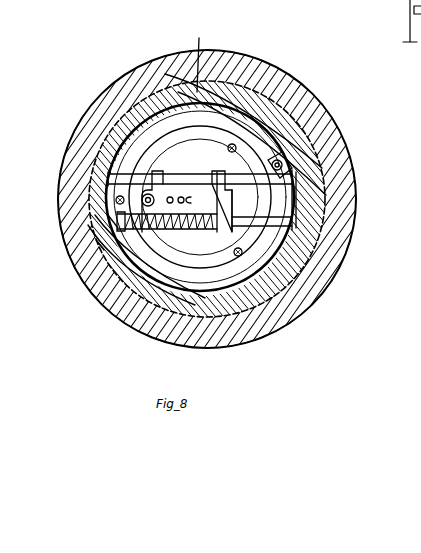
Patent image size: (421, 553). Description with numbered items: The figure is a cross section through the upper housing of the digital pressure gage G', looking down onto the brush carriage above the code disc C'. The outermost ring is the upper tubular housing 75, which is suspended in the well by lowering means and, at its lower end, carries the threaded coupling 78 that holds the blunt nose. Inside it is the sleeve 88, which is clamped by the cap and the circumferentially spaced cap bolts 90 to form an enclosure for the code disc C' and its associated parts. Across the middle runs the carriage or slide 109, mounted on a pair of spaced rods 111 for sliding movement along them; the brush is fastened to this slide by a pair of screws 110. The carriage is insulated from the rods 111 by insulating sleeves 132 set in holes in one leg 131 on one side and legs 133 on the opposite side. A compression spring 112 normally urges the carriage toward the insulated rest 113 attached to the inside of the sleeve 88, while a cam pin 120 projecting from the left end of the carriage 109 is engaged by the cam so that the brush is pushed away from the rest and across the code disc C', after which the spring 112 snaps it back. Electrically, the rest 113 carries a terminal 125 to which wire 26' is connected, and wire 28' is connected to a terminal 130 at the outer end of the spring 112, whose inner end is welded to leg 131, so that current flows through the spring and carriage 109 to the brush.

The digital pressure gage G' is at (207, 191).
The upper tubular housing 75 is at (188, 59).
The cap bolts 90 is at (247, 117).
The code disc C' is at (177, 188).
The terminal 125 is at (288, 150).
The wire 26' is at (318, 165).
The spaced rods 111 is at (300, 202).
The insulated rest 113 is at (305, 218).
The sleeve 88 is at (290, 248).
The threaded coupling 78 is at (316, 280).
The legs 133 is at (158, 157).
The insulating sleeves 132 is at (232, 152).
The screws 110 is at (187, 201).
The carriage or slide 109 is at (230, 200).
The compression spring 112 is at (153, 229).
The leg 131 is at (223, 230).
The cam pin 120 is at (104, 212).
The terminal 130 is at (120, 224).
The wire 28' is at (68, 261).